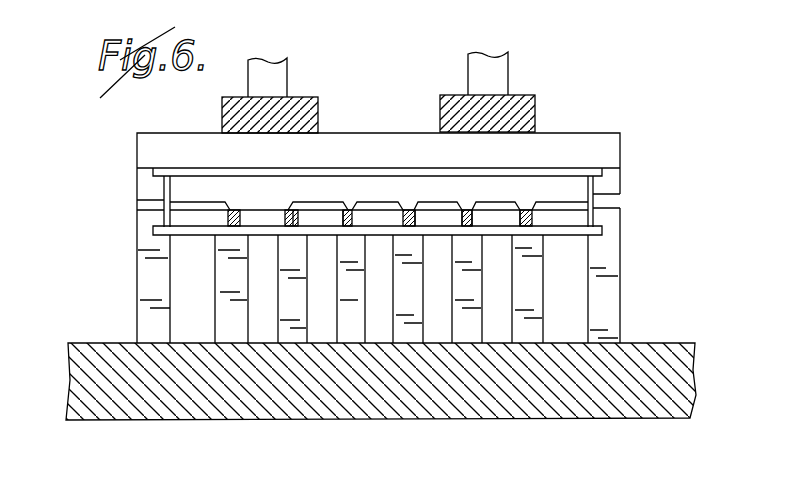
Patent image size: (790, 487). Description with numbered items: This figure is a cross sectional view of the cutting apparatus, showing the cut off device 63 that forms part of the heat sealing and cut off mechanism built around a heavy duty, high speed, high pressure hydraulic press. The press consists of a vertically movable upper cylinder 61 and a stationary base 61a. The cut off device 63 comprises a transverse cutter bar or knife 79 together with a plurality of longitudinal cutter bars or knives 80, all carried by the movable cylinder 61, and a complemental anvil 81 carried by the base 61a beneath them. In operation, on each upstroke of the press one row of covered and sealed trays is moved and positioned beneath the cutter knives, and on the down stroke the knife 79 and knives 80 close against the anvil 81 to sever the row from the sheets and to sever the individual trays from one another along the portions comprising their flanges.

The upper cylinder 61 is at (595, 140).
The base 61a is at (660, 352).
The cut off device 63 is at (640, 198).
The transverse cutter bar 79 is at (452, 202).
The longitudinal cutter bars 80 is at (352, 208).
The anvil 81 is at (242, 224).